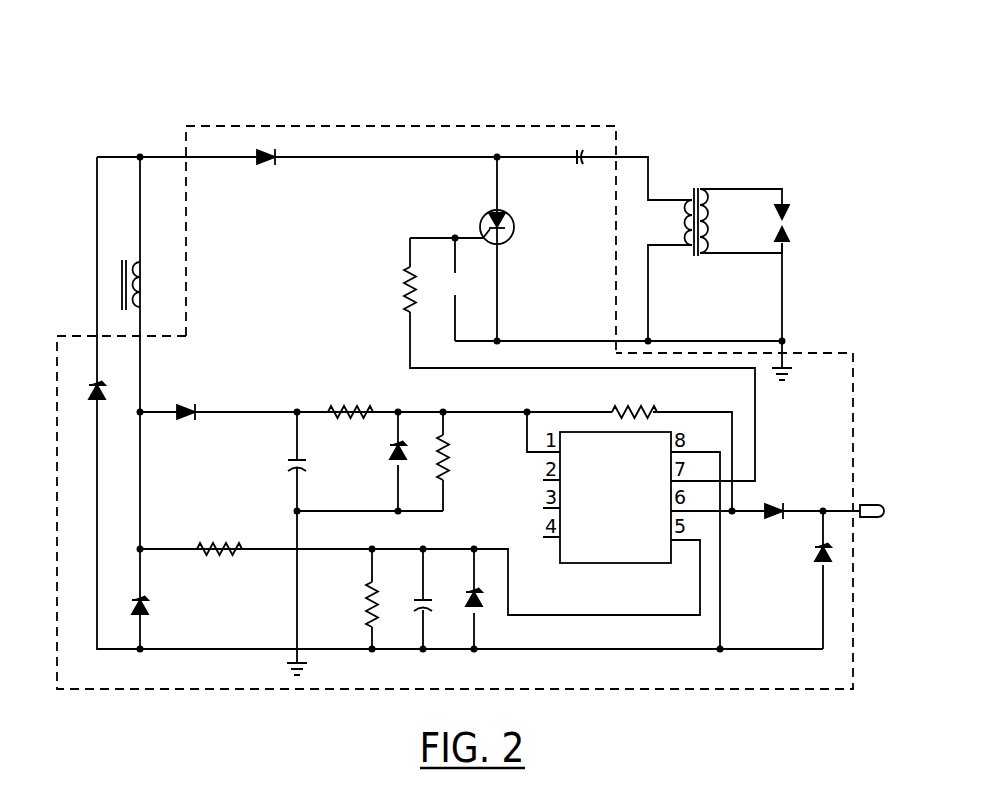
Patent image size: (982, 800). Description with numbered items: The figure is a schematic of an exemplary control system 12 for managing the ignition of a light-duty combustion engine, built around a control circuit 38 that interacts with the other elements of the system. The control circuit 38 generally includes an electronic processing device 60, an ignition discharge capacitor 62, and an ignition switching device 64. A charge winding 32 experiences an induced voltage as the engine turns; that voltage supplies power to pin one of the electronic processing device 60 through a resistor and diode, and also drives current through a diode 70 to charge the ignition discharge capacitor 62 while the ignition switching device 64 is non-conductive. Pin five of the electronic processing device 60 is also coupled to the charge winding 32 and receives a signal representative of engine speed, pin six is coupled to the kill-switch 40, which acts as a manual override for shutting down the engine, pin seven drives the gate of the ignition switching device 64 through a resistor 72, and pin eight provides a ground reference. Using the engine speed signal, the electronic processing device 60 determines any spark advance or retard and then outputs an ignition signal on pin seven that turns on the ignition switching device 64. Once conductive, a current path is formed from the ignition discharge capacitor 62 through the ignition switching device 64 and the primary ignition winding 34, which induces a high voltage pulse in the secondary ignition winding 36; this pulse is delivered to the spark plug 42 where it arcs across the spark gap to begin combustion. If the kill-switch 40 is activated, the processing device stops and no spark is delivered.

The control system 12 is at (158, 74).
The charge winding 32 is at (118, 278).
The primary ignition winding 34 is at (685, 186).
The secondary ignition winding 36 is at (712, 178).
The control circuit 38 is at (853, 622).
The kill-switch 40 is at (880, 497).
The spark plug 42 is at (792, 222).
The electronic processing device 60 is at (608, 563).
The ignition discharge capacitor 62 is at (582, 166).
The ignition switching device 64 is at (485, 215).
The diode 70 is at (266, 164).
The resistor 72 is at (404, 290).